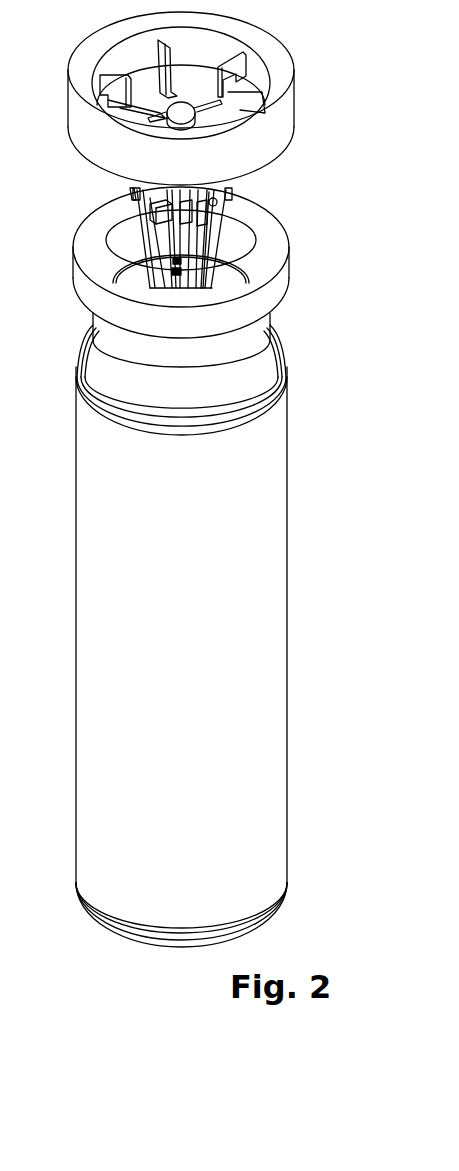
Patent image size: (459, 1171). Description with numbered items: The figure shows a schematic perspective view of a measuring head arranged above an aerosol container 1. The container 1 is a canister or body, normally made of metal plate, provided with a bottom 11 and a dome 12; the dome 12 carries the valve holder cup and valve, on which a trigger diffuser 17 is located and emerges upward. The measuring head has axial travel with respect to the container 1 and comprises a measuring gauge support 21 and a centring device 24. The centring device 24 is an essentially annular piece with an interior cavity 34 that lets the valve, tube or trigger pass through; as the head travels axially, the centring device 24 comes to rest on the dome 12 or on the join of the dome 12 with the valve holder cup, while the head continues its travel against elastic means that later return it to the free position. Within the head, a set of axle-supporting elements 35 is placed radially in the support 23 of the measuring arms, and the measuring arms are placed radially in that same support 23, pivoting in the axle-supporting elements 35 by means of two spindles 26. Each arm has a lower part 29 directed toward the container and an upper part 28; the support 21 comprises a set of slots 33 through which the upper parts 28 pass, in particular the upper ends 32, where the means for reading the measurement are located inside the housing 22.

The aerosol container 1 is at (98, 628).
The bottom of the aerosol container 11 is at (110, 930).
The dome of the aerosol container 12 is at (100, 357).
The trigger diffuser 17 is at (213, 282).
The support of the measuring device 21 is at (283, 81).
The housing of the means for reading the measurement 22 is at (150, 77).
The support of the measuring arms 23 is at (128, 192).
The centring device 24 is at (85, 242).
The spindles of the mechanical measuring devices 26 is at (220, 216).
The upper part of the measuring arms 28 is at (122, 100).
The lower part of the measuring arms 29 is at (213, 236).
The upper end of the measuring arms 32 is at (241, 62).
The slots for allowing through the top part of the measuring arms 33 is at (205, 102).
The interior cavity of the centring device 34 is at (145, 285).
The axle-supporting elements 35 is at (218, 201).